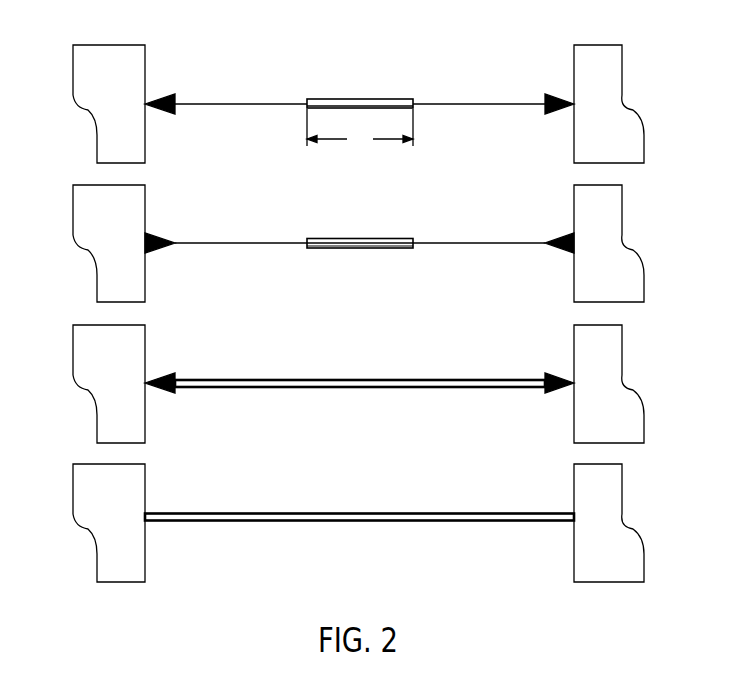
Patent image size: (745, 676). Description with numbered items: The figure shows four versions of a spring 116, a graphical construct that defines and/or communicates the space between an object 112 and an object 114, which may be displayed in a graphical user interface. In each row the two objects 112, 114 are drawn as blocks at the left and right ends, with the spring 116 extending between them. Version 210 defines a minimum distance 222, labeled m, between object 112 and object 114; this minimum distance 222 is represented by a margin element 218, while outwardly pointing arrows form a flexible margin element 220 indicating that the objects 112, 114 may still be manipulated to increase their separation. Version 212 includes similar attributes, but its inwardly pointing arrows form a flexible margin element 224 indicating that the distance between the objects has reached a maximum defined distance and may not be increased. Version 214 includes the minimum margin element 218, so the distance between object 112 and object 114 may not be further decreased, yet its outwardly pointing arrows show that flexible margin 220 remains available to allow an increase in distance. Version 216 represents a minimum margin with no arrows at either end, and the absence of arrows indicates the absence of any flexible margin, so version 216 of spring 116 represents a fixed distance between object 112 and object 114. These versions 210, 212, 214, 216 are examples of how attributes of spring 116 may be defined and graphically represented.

The object 112 is at (73, 80).
The object 114 is at (622, 68).
The spring 116 is at (338, 98).
The margin element 218 is at (387, 98).
The version of spring 210 is at (478, 103).
The version of spring 212 is at (478, 242).
The version of spring 214 is at (478, 379).
The version of spring 216 is at (478, 512).
The flexible margin element 220 is at (167, 95).
The minimum distance 222 is at (413, 128).
The flexible margin element 224 is at (158, 237).